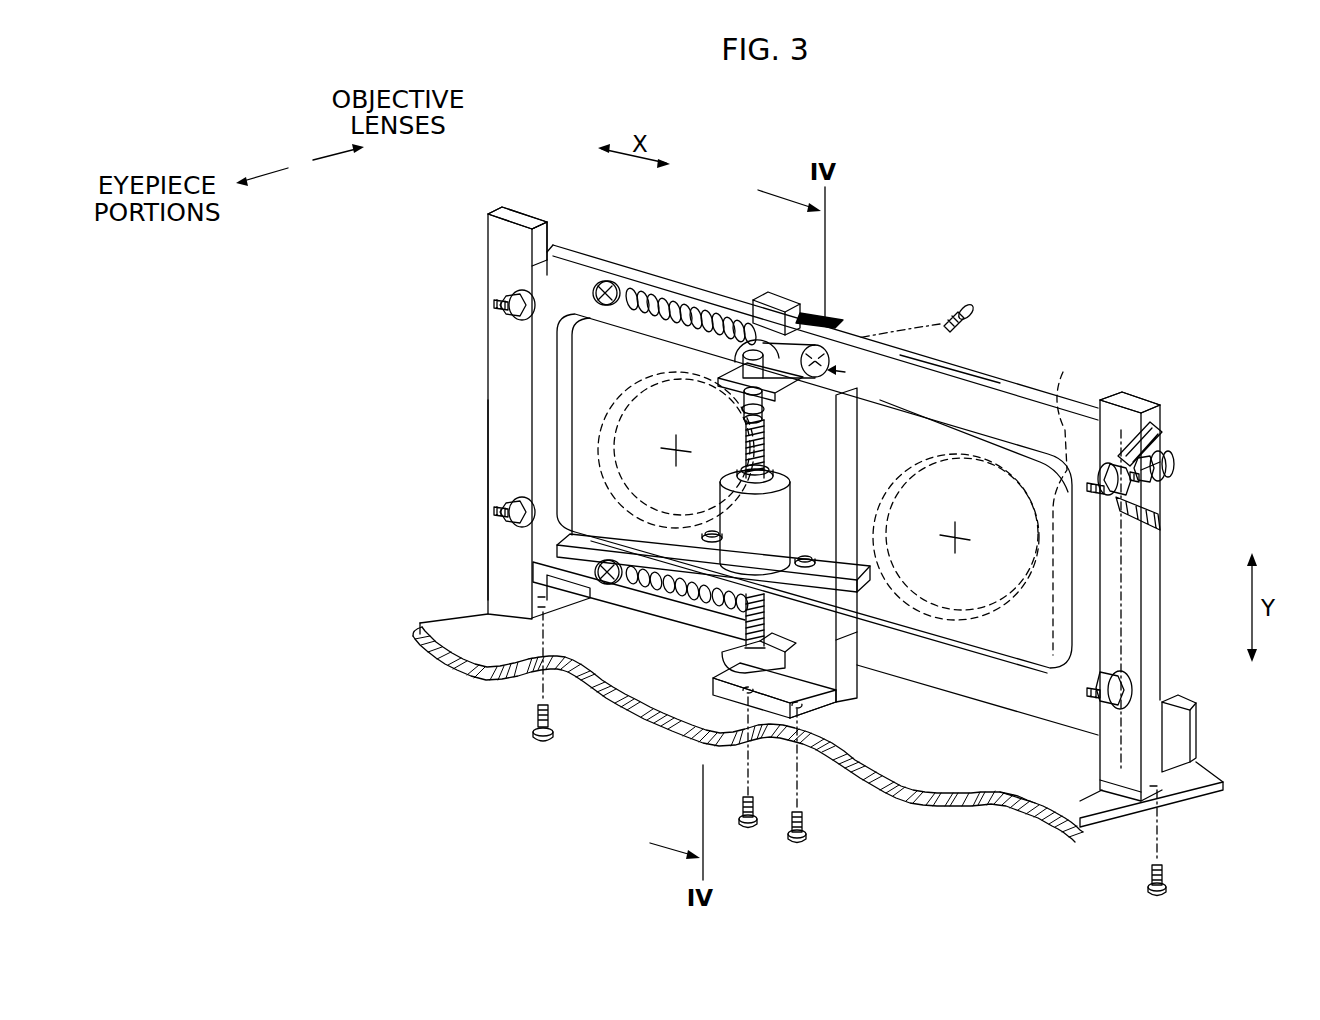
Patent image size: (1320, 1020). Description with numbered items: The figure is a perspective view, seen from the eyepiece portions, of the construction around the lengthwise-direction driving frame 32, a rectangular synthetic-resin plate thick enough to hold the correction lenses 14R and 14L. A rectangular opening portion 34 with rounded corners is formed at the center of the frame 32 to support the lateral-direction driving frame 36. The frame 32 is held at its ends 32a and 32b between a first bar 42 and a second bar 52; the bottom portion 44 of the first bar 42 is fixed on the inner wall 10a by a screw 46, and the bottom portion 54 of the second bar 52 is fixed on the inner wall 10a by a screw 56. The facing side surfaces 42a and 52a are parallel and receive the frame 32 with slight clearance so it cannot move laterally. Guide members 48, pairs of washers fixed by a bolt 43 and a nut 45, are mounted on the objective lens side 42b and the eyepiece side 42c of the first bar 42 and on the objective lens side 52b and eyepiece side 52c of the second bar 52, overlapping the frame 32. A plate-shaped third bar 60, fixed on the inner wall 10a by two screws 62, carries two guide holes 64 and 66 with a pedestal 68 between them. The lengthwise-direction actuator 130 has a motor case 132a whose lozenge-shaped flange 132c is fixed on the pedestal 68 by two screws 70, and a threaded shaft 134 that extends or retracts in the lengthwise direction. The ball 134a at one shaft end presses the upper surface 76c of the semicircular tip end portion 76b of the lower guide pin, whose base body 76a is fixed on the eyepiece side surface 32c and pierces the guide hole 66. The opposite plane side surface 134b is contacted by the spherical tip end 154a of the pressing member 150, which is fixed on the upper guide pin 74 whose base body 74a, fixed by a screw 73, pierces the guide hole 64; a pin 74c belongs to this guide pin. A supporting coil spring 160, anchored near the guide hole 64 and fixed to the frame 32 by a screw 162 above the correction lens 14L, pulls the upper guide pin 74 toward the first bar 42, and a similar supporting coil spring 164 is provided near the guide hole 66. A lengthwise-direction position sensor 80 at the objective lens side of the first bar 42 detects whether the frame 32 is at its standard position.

The inner wall 10a is at (1045, 790).
The correction lens 14L is at (665, 305).
The correction lens 14R is at (1000, 408).
The lengthwise-direction driving frame 32 is at (861, 334).
The end of frame 32a is at (1115, 470).
The end of frame 32b is at (521, 270).
The eyepiece side surface of frame 32c is at (958, 397).
The opening portion 34 is at (1043, 787).
The lateral-direction driving frame 36 is at (1062, 500).
The first bar 42 is at (1133, 400).
The side surface of first bar 42a is at (1106, 396).
The objective lens side of first bar 42b is at (1165, 535).
The eyepiece side of first bar 42c is at (1118, 783).
The bolt 43 is at (495, 307).
The bottom portion of first bar 44 is at (1190, 790).
The nut 45 is at (506, 318).
The screw 46 is at (1170, 890).
The guide members 48 is at (507, 300).
The second bar 52 is at (490, 213).
The side surface of second bar 52a is at (541, 240).
The objective lens side of second bar 52b is at (516, 205).
The eyepiece side of second bar 52c is at (500, 418).
The bottom portion of second bar 54 is at (573, 660).
The screw 56 is at (542, 742).
The third bar 60 is at (867, 695).
The screws 62 is at (800, 835).
The guide hole 64 is at (770, 300).
The guide hole 66 is at (857, 718).
The pedestal 68 is at (853, 719).
The screws 70 is at (710, 532).
The screw 73 is at (958, 304).
The upper guide pin 74 is at (872, 330).
The base body of upper guide pin 74a is at (852, 325).
The lever pin 74c is at (738, 345).
The base body of lower guide pin 76a is at (856, 708).
The tip end portion of lower guide pin 76b is at (720, 665).
The upper surface of tip end portion 76c is at (772, 748).
The lengthwise-direction position sensor 80 is at (1172, 708).
The lengthwise-direction actuator 130 is at (800, 514).
The motor case 132a is at (690, 590).
The flange 132c is at (702, 592).
The shaft 134 is at (766, 442).
The ball 134a is at (733, 667).
The side surface of shaft 134b is at (765, 418).
The pressing member 150 is at (744, 417).
The tip end of press pin 154a is at (748, 416).
The supporting coil spring 160 is at (650, 298).
The screw 162 is at (605, 281).
The supporting coil spring 164 is at (556, 545).